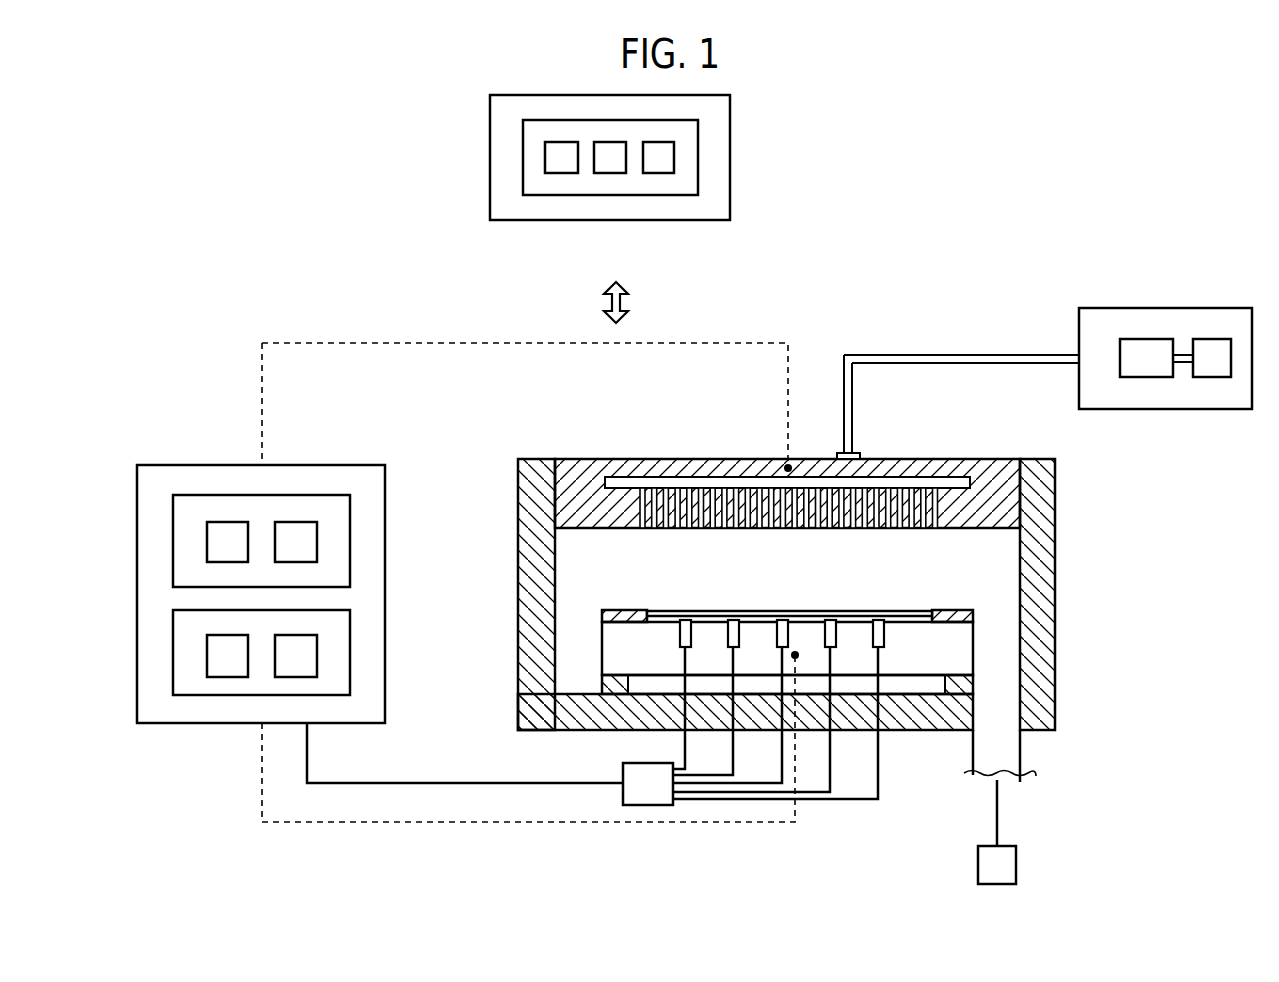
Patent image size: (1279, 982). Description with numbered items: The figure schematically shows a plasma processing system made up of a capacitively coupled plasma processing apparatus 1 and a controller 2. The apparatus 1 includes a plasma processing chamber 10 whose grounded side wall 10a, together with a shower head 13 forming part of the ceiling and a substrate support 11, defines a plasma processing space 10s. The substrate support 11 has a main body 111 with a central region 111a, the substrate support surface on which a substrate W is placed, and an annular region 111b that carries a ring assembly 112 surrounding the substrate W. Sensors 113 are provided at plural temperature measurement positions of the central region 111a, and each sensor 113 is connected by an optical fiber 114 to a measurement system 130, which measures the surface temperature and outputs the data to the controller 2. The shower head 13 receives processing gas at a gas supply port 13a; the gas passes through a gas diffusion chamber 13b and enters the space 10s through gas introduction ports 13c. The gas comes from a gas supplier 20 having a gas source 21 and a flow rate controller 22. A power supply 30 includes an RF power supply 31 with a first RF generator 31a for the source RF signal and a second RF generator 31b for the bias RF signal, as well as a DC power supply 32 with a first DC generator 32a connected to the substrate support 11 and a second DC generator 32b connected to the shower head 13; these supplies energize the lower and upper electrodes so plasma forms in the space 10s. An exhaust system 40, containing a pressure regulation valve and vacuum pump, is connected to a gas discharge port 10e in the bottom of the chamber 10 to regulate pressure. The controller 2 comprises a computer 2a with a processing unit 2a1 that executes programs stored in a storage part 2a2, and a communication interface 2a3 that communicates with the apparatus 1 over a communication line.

The capacitively coupled plasma processing apparatus 1 is at (913, 294).
The controller 2 is at (758, 117).
The computer 2a is at (533, 153).
The processing unit 2a1 is at (561, 175).
The storage part 2a2 is at (611, 175).
The communication interface 2a3 is at (659, 175).
The plasma processing chamber 10 is at (577, 430).
The side wall 10a is at (1045, 598).
The plasma processing space 10s is at (577, 554).
The gas discharge port 10e is at (1020, 752).
The substrate support 11 is at (648, 596).
The main body 111 is at (602, 652).
The central region 111a is at (903, 628).
The annular region 111b is at (630, 622).
The ring assembly 112 is at (953, 610).
The sensors 113 is at (685, 618).
The optical fiber 114 is at (683, 752).
The measurement system 130 is at (623, 775).
The substrate W is at (870, 610).
The shower head 13 is at (637, 456).
The gas supply port 13a is at (840, 455).
The gas diffusion chamber 13b is at (713, 483).
The gas introduction ports 13c is at (797, 517).
The gas supplier 20 is at (1188, 304).
The gas source 21 is at (1215, 368).
The flow rate controller 22 is at (1150, 368).
The power supply 30 is at (392, 738).
The RF power supply 31 is at (183, 543).
The first RF generator 31a is at (220, 530).
The second RF generator 31b is at (300, 530).
The DC power supply 32 is at (183, 660).
The first DC generator 32a is at (220, 670).
The second DC generator 32b is at (308, 660).
The exhaust system 40 is at (1016, 863).